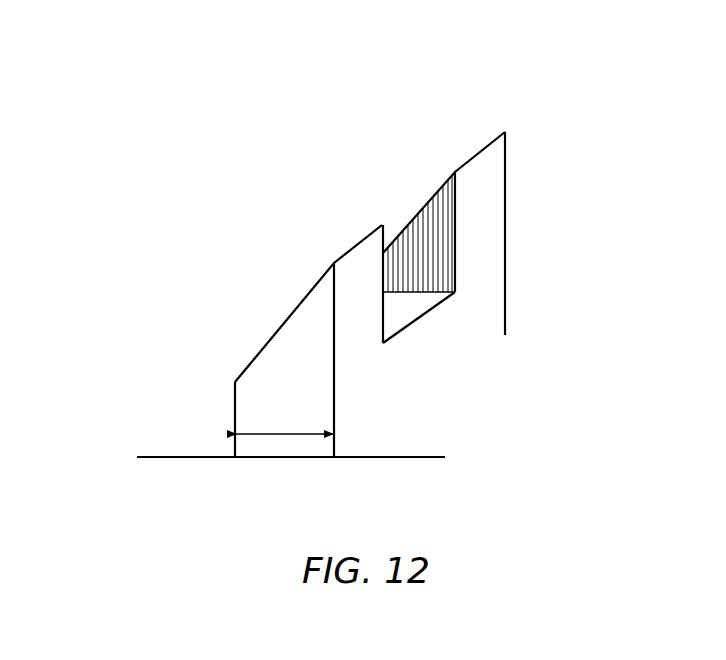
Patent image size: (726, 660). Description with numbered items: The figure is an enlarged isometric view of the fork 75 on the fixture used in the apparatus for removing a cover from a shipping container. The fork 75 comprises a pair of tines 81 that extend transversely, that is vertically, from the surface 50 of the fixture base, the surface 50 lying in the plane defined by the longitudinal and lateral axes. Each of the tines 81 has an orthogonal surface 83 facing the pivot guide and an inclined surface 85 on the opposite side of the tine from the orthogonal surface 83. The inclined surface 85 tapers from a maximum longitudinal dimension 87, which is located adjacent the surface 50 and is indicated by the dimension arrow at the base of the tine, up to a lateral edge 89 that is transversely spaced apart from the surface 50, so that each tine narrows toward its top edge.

The fork 75 is at (367, 280).
The surface 50 is at (160, 454).
The tines 81 is at (287, 368).
The inclined surface 85 is at (282, 320).
The orthogonal surface 83 is at (353, 298).
The lateral edge 89 is at (350, 250).
The maximum longitudinal dimension 87 is at (272, 434).